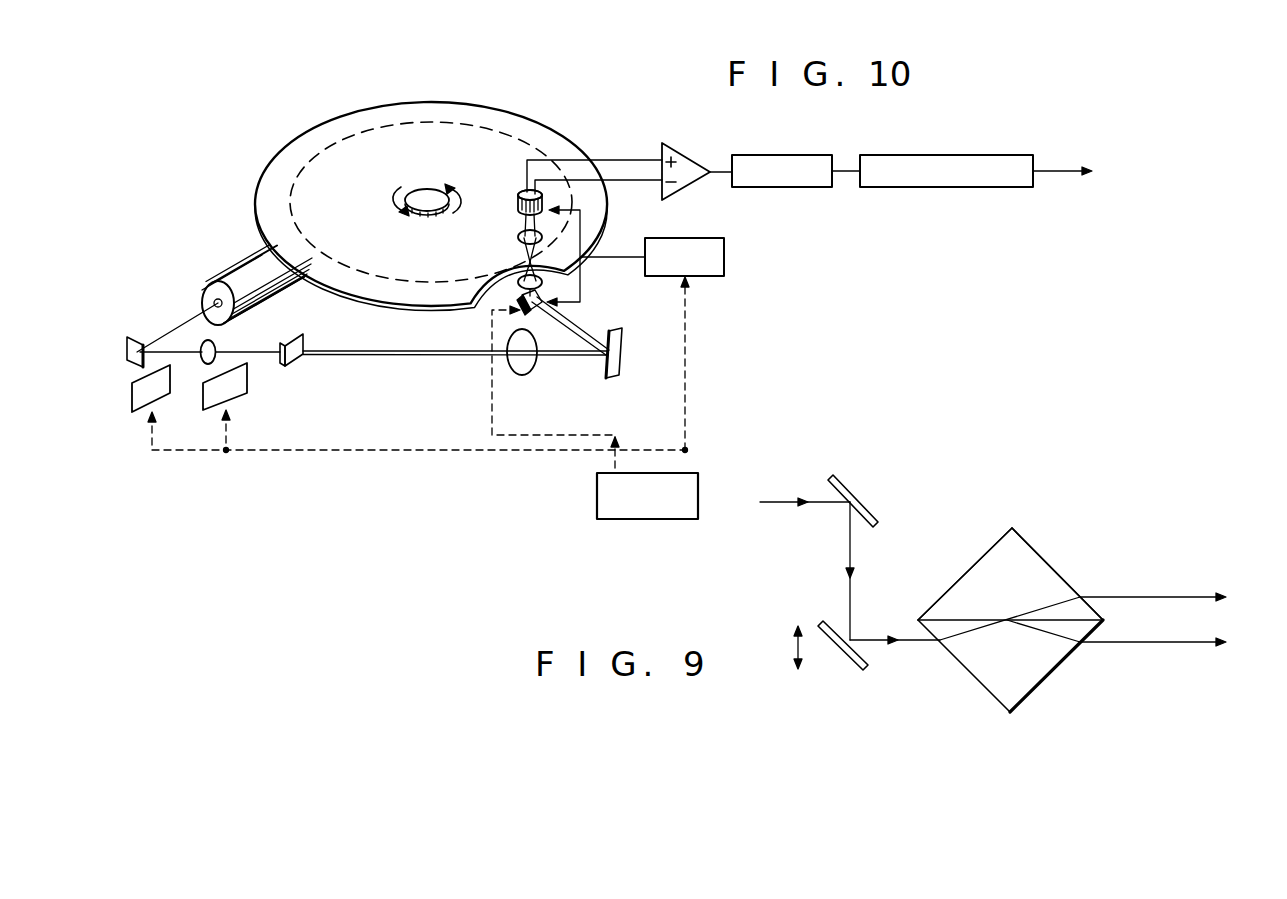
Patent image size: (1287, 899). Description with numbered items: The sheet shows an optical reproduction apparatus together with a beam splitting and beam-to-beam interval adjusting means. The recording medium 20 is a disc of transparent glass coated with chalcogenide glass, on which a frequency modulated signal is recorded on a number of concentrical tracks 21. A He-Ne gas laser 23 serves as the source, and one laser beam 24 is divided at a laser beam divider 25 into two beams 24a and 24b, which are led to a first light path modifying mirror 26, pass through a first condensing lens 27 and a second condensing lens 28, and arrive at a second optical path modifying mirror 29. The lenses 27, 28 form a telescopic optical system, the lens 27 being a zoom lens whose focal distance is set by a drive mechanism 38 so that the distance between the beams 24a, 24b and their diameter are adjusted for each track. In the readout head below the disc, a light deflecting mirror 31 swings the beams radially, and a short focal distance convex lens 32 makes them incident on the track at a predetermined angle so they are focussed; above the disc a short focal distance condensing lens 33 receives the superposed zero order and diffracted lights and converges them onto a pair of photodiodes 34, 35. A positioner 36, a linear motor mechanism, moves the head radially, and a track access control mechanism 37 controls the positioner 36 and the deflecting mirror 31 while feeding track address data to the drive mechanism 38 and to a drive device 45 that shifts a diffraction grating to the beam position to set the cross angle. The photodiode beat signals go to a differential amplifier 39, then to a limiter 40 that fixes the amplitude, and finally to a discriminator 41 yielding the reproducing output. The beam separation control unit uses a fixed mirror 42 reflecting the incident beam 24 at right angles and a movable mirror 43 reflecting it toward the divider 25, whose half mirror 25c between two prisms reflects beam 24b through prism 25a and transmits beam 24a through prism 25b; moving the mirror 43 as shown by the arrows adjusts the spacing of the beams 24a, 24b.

In FIG. 10, the recording medium 20 is at (295, 139).
In FIG. 10, the concentrical tracks 21 is at (307, 167).
In FIG. 10, the He-Ne gas laser 23 is at (241, 263).
In FIG. 10, the laser beam 24 is at (185, 328).
In FIG. 9, the laser beam 24 is at (786, 502).
In FIG. 10, the laser beam 24a is at (422, 352).
In FIG. 9, the laser beam 24a is at (1174, 643).
In FIG. 10, the laser beam 24b is at (420, 357).
In FIG. 9, the laser beam 24b is at (1176, 584).
In FIG. 10, the laser beam divider 25 is at (290, 364).
In FIG. 9, the laser beam divider 25 is at (1048, 574).
In FIG. 9, the prism 25a is at (1030, 554).
In FIG. 9, the prism 25b is at (1033, 687).
In FIG. 9, the half mirror 25c is at (919, 620).
In FIG. 10, the first light path modifying mirror 26 is at (134, 337).
In FIG. 10, the first condensing lens 27 is at (218, 344).
In FIG. 10, the second condensing lens 28 is at (534, 365).
In FIG. 10, the second optical path modifying mirror 29 is at (622, 358).
In FIG. 10, the light deflecting mirror 31 is at (515, 302).
In FIG. 10, the short focal distance convex lens 32 is at (518, 268).
In FIG. 10, the short focal distance condensing lens 33 is at (518, 239).
In FIG. 10, the photodiode 34 is at (514, 190).
In FIG. 10, the photodiode 35 is at (509, 198).
In FIG. 10, the positioner 36 is at (724, 257).
In FIG. 10, the track access control mechanism 37 is at (641, 519).
In FIG. 10, the zoom lens drive mechanism 38 is at (135, 386).
In FIG. 10, the differential amplifier 39 is at (698, 150).
In FIG. 10, the limiter 40 is at (779, 154).
In FIG. 10, the discriminator 41 is at (943, 154).
In FIG. 9, the fixed mirror 42 is at (859, 504).
In FIG. 9, the movable mirror 43 is at (841, 658).
In FIG. 10, the drive device 45 is at (236, 392).